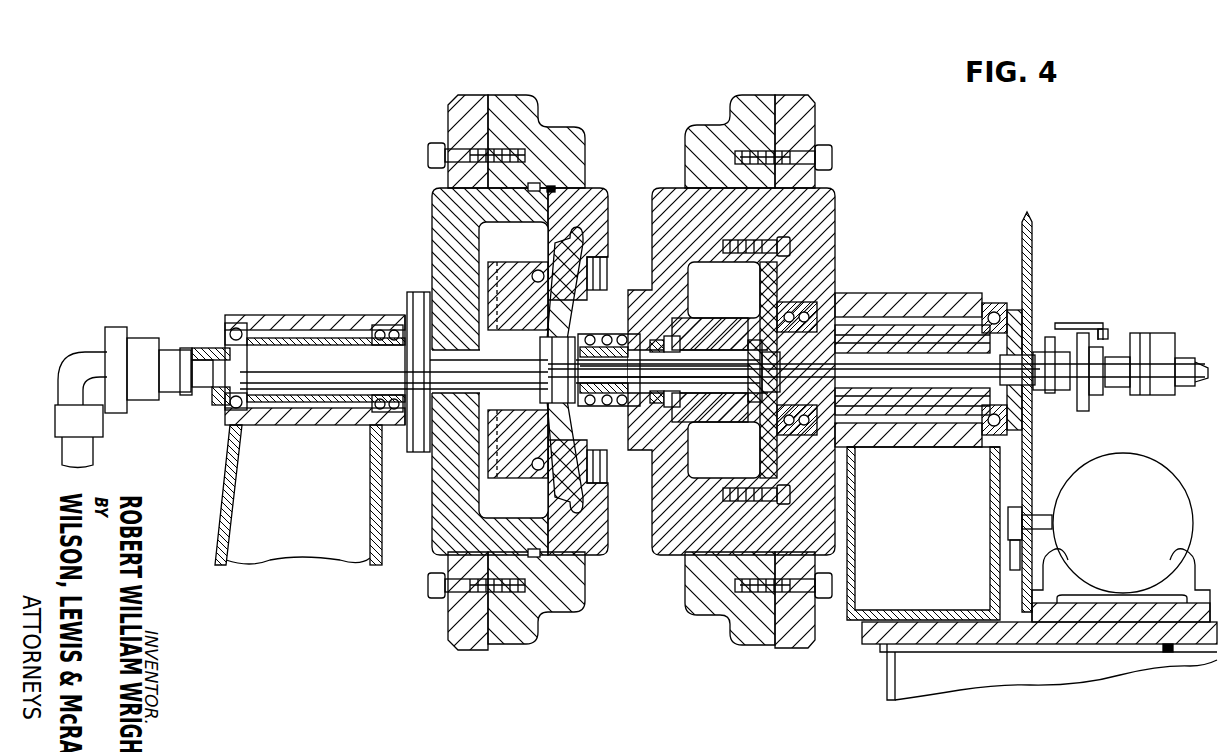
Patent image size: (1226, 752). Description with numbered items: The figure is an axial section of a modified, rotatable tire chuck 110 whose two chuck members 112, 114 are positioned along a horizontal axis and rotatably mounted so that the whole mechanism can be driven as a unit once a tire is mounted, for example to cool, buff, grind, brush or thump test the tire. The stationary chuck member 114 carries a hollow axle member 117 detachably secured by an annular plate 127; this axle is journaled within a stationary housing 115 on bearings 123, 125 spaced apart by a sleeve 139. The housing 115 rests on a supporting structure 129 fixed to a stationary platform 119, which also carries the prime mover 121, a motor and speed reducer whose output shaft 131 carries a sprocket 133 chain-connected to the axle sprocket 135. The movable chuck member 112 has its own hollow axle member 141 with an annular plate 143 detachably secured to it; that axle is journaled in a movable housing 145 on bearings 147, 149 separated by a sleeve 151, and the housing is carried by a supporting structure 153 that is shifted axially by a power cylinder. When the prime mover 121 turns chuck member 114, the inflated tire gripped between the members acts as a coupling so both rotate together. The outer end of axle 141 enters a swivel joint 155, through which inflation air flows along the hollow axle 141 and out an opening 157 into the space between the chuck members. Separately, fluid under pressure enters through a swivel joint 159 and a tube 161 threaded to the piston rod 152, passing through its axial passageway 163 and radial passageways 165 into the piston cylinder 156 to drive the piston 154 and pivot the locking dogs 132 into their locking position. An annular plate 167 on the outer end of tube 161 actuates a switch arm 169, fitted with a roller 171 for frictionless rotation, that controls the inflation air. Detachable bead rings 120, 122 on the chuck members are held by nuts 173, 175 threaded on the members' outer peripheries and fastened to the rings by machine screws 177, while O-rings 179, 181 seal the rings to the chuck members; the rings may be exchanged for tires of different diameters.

The chuck 110 is at (292, 188).
The movable chuck member 112 is at (424, 222).
The stationary chuck member 114 is at (848, 200).
The stationary housing 115 is at (932, 303).
The hollow axle member 117 is at (893, 345).
The stationary platform 119 is at (875, 644).
The bead ring 120 is at (573, 147).
The prime mover 121 is at (1137, 521).
The bead ring 122 is at (697, 137).
The bearing 123 is at (820, 280).
The bearing 125 is at (1012, 274).
The annular plate 127 is at (768, 278).
The supporting structure 129 is at (856, 494).
The output shaft 131 is at (1048, 517).
The locking dogs 132 is at (563, 330).
The sprocket 133 is at (1014, 565).
The axle sprocket 135 is at (1032, 476).
The sleeve 139 is at (872, 328).
The hollow axle member 141 is at (318, 362).
The annular plate 143 is at (418, 294).
The movable housing 145 is at (292, 325).
The bearing 147 is at (222, 332).
The bearing 149 is at (398, 300).
The sleeve 151 is at (352, 402).
The piston rod 152 is at (637, 372).
The supporting structure 153 is at (224, 490).
The piston 154 is at (722, 346).
The swivel joint 155 is at (142, 348).
The piston cylinder 156 is at (730, 420).
The opening 157 is at (462, 380).
The swivel joint 159 is at (1166, 350).
The tube 161 is at (1050, 395).
The axial passageway 163 is at (712, 353).
The radial passageways 165 is at (712, 390).
The annular plate 167 is at (1090, 400).
The switch arm 169 is at (1062, 325).
The roller 171 is at (1106, 333).
The nut 173 is at (478, 72).
The nut 175 is at (800, 100).
The machine screws 177 is at (440, 152).
The O-ring 179 is at (560, 182).
The O-ring 181 is at (712, 192).